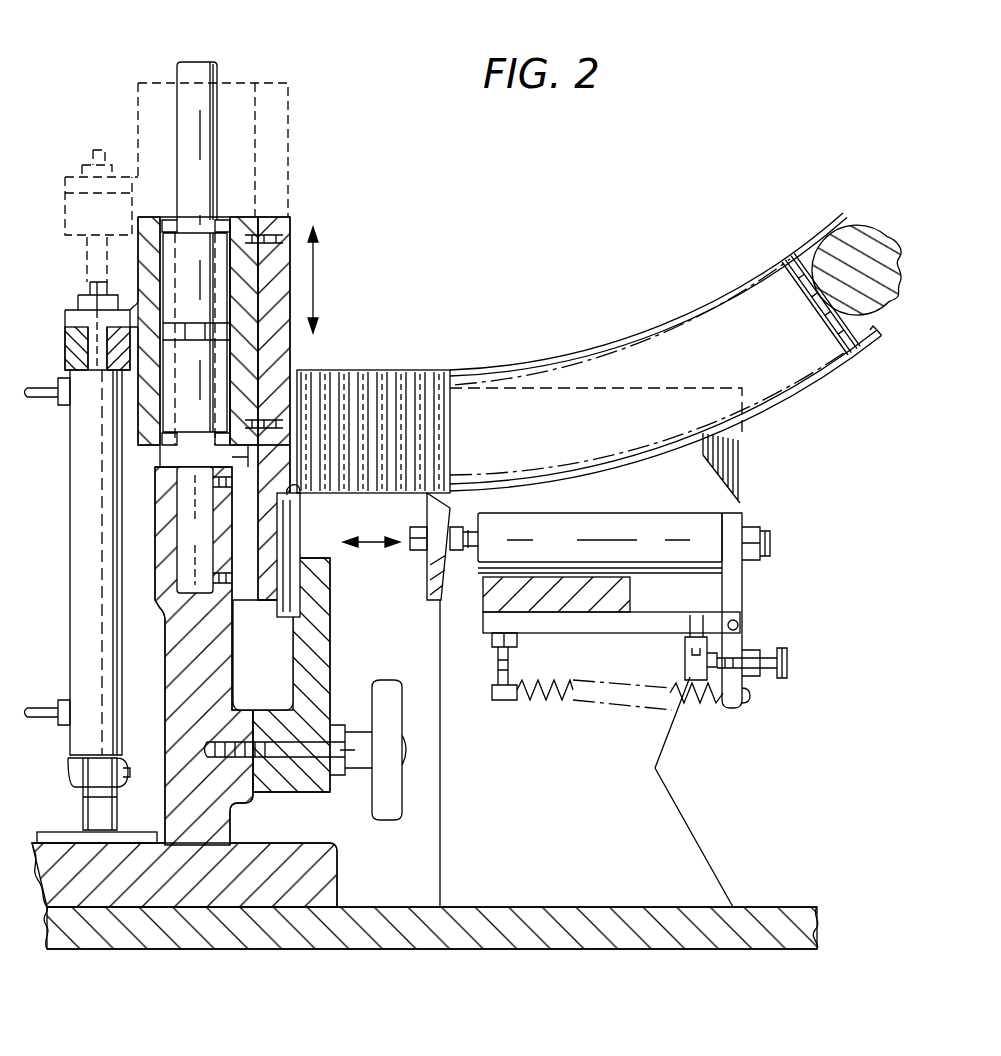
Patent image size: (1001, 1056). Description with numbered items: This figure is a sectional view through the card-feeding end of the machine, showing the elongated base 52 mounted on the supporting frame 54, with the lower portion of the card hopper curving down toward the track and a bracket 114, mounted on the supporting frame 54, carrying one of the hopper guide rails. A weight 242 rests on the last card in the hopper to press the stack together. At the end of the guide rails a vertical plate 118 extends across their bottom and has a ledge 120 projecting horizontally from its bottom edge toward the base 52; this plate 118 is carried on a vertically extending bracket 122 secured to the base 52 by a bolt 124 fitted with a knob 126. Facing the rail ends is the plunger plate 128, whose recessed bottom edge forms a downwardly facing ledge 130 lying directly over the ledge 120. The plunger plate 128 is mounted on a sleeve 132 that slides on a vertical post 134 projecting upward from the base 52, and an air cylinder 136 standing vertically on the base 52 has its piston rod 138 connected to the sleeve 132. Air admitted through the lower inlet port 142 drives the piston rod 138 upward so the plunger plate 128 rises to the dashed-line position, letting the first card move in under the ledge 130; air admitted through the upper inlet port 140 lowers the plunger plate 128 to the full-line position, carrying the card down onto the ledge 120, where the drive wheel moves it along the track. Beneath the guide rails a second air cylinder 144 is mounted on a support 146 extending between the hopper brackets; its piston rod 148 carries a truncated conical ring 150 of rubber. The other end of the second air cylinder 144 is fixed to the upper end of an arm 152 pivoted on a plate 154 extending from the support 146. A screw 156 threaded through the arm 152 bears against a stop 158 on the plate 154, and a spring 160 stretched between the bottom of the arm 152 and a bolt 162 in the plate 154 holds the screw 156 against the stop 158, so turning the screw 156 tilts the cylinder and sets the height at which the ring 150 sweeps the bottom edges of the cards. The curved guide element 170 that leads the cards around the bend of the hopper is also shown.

The base 52 is at (230, 890).
The supporting frame 54 is at (803, 940).
The bracket 114 is at (673, 793).
The vertical plate 118 is at (297, 542).
The ledge 120 is at (283, 620).
The bracket 122 is at (330, 627).
The bolt 124 is at (290, 750).
The knob 126 is at (362, 777).
The plunger plate 128 is at (290, 247).
The ledge 130 is at (300, 492).
The sleeve 132 is at (240, 230).
The vertical post 134 is at (212, 62).
The air cylinder 136 is at (75, 590).
The piston rod 138 is at (90, 327).
The upper inlet port 140 is at (43, 402).
The lower inlet port 142 is at (40, 718).
The second air cylinder 144 is at (703, 520).
The support 146 is at (490, 593).
The piston rod 148 is at (477, 543).
The truncated conical ring 150 is at (427, 580).
The arm 152 is at (737, 588).
The plate 154 is at (602, 623).
The screw 156 is at (762, 662).
The stop 158 is at (682, 643).
The spring 160 is at (563, 700).
The bolt 162 is at (502, 697).
The conveyor belt track 170 is at (568, 353).
The weight 242 is at (870, 222).